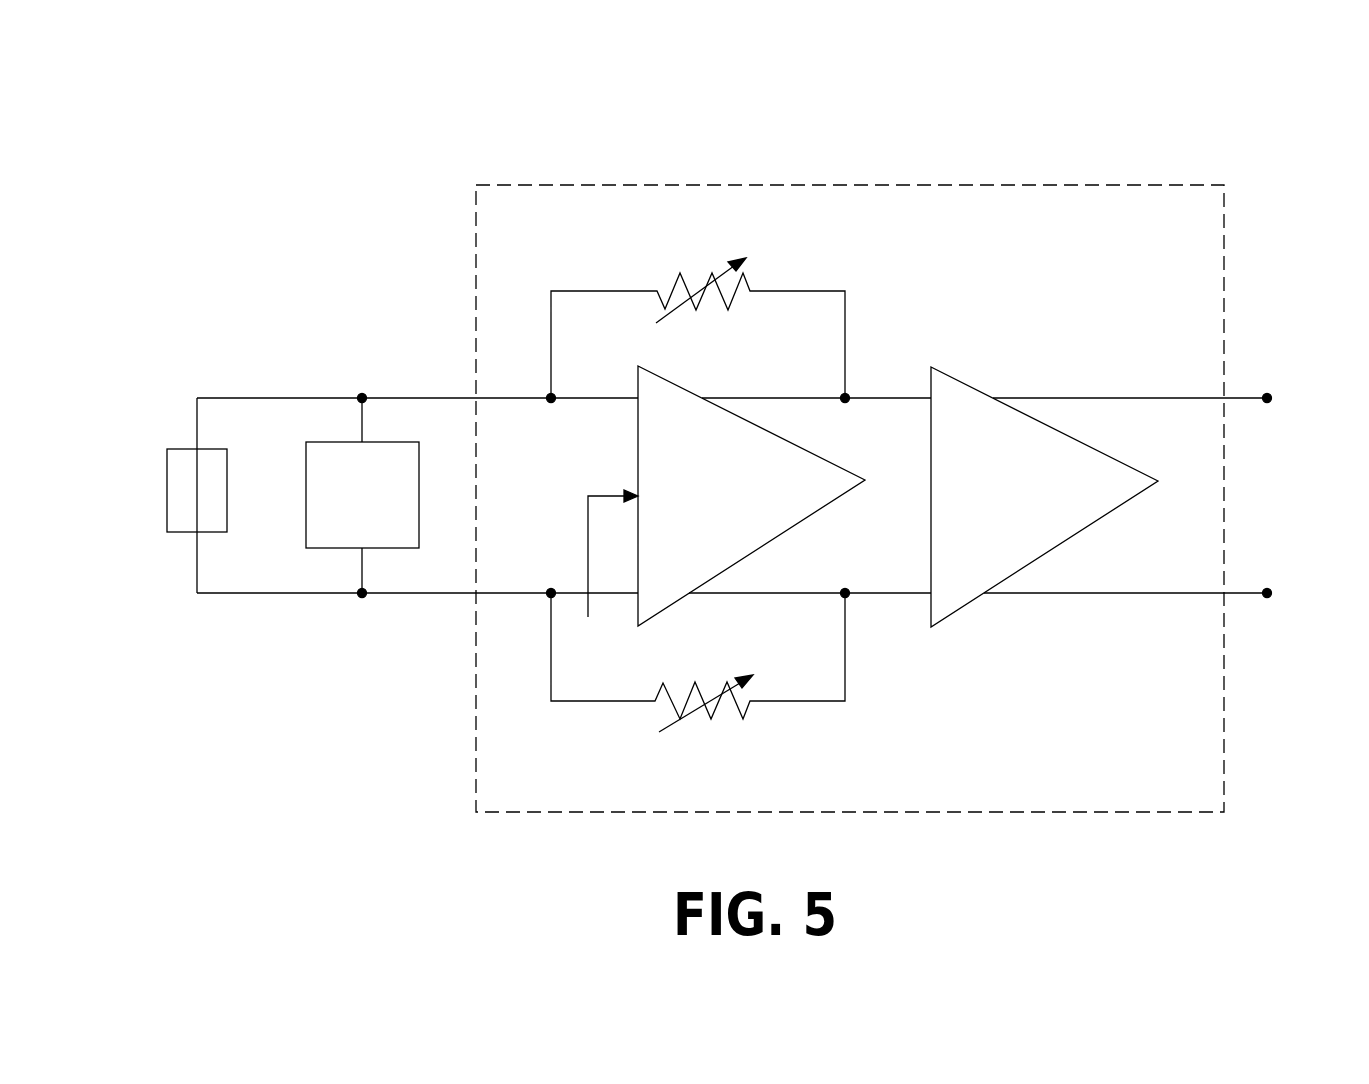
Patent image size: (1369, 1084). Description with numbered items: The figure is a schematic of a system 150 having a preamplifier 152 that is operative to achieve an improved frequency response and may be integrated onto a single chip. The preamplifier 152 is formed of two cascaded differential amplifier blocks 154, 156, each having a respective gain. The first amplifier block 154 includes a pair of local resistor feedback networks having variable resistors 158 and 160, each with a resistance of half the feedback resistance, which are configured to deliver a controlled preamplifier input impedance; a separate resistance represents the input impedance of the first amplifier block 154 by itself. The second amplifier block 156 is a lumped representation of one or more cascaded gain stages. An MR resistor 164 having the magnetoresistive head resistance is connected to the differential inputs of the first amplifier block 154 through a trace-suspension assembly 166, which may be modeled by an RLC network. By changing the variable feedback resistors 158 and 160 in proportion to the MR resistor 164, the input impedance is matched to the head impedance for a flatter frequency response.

The system 150 is at (1126, 153).
The preamplifier 152 is at (788, 185).
The first amplifier block 154 is at (793, 528).
The second amplifier block 156 is at (1093, 525).
The variable feedback resistor 158 is at (727, 310).
The variable feedback resistor 160 is at (698, 686).
The MR resistor 164 is at (167, 500).
The trace-suspension assembly 166 is at (306, 442).